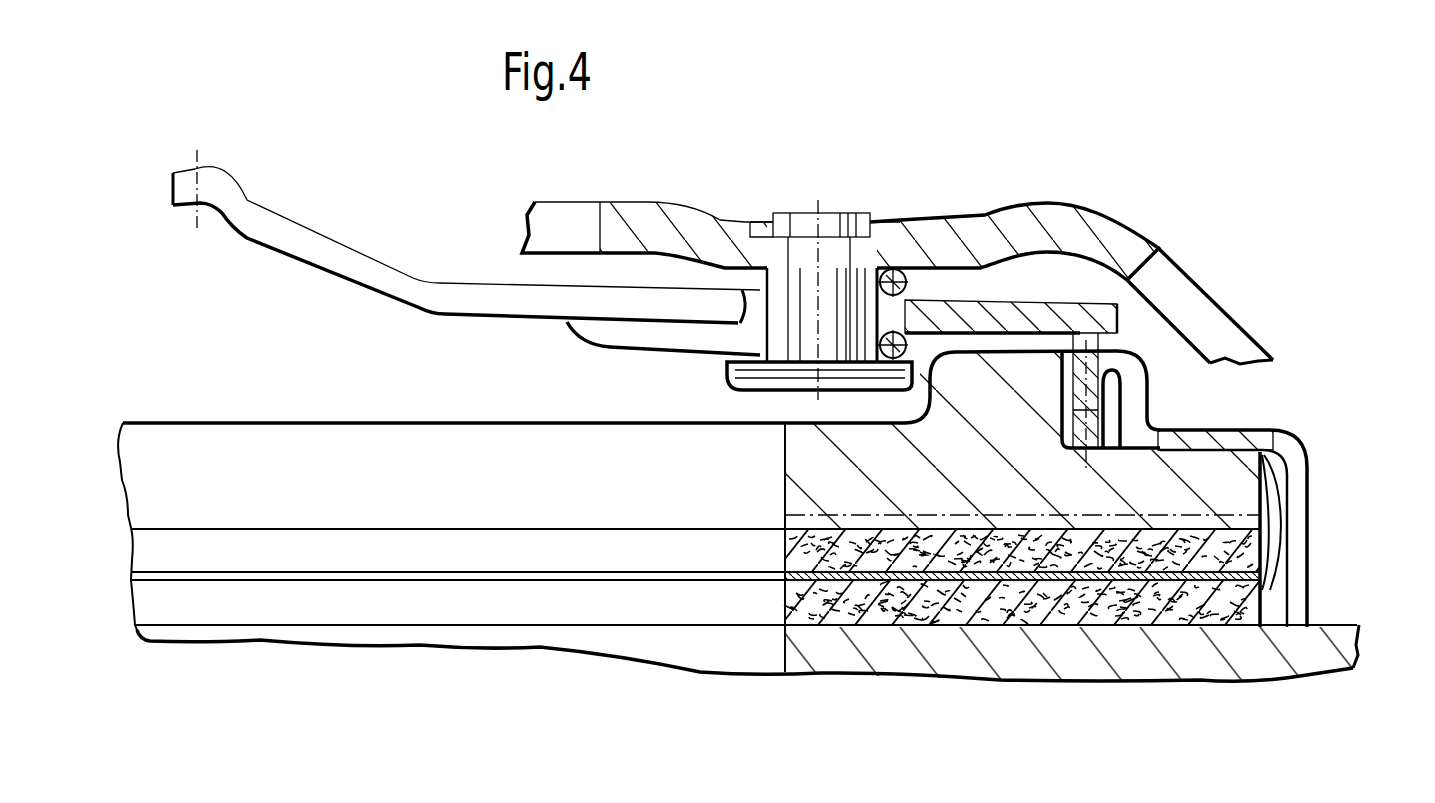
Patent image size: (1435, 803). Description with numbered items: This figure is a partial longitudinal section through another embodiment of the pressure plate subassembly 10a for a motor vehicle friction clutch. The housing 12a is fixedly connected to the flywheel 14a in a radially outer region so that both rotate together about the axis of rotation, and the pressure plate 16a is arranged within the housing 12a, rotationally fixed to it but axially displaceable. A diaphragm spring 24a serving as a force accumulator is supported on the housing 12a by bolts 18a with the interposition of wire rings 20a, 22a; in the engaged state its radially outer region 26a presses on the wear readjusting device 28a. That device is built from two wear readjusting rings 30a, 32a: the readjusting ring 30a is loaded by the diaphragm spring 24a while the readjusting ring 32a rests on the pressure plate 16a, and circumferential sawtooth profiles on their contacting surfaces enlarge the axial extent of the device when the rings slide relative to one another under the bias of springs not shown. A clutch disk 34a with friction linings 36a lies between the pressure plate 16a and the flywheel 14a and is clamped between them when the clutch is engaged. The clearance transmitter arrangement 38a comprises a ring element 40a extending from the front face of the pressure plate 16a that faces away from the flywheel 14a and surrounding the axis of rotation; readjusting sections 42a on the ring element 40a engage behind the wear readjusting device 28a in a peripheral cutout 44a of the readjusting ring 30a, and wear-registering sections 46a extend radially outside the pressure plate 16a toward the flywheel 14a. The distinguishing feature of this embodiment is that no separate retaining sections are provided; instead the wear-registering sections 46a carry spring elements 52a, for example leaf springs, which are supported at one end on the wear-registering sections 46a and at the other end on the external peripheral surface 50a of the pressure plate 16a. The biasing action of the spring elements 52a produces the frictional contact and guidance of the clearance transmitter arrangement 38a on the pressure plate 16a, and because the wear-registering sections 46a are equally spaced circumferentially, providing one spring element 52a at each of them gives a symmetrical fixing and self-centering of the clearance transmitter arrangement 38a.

The pressure plate subassembly 10a is at (1108, 115).
The housing 12a is at (1103, 205).
The flywheel 14a is at (1323, 627).
The pressure plate 16a is at (342, 422).
The bolt 18a is at (780, 213).
The wire ring 20a is at (897, 268).
The wire ring 22a is at (925, 268).
The diaphragm spring 24a is at (333, 240).
The radially outer region 26a is at (983, 300).
The wear readjusting device 28a is at (1137, 325).
The wear readjusting ring 30a is at (1073, 445).
The wear readjusting ring 32a is at (1058, 450).
The clutch disk 34a is at (482, 583).
The friction linings 36a is at (1107, 595).
The clearance transmitter arrangement 38a is at (1280, 337).
The ring element 40a is at (1217, 430).
The readjusting section 42a is at (1139, 360).
The peripheral cutout 44a is at (1130, 337).
The wear-registering section 46a is at (1297, 510).
The external peripheral surface 50a is at (1077, 350).
The spring element 52a is at (1275, 485).